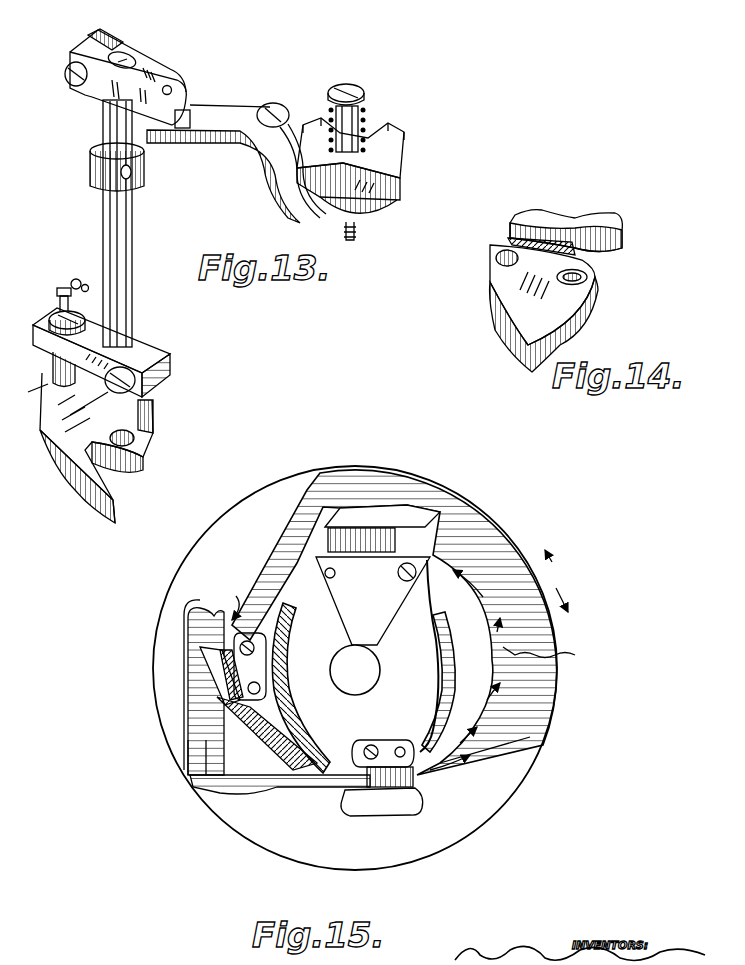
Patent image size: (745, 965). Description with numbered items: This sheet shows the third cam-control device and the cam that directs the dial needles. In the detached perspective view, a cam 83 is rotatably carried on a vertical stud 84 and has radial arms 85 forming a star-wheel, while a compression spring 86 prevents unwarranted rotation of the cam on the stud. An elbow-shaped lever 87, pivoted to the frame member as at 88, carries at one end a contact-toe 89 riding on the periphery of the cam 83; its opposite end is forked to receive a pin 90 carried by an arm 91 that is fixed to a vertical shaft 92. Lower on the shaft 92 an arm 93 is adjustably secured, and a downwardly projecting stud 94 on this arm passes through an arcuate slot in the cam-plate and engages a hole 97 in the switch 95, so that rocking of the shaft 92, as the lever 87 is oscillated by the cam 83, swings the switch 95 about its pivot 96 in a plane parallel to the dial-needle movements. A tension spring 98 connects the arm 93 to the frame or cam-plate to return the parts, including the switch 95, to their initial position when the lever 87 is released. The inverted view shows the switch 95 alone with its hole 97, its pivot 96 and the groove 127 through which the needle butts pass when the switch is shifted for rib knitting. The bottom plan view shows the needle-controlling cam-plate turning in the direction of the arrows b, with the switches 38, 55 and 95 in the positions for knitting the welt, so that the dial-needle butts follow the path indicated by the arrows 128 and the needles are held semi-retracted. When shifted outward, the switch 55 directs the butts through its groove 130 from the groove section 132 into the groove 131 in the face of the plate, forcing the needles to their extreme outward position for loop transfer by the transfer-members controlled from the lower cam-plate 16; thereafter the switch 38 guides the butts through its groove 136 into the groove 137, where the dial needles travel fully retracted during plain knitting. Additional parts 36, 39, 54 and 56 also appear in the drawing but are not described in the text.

In FIG. 15, the lower cam-plate 16 is at (530, 765).
In FIG. 15, the latch 36 is at (405, 740).
In FIG. 15, the switch 38 is at (388, 800).
In FIG. 15, the screw 39 is at (371, 745).
In FIG. 15, the screw 54 is at (256, 694).
In FIG. 15, the switch 55 is at (228, 655).
In FIG. 15, the screw 56 is at (252, 642).
In FIG. 13, the cam 83 is at (356, 190).
In FIG. 13, the vertical stud 84 is at (369, 113).
In FIG. 13, the radial arms 85 is at (400, 132).
In FIG. 13, the compression spring 86 is at (372, 116).
In FIG. 13, the elbow-shaped lever 87 is at (272, 152).
In FIG. 13, the pivot 88 is at (282, 97).
In FIG. 13, the contact-toe 89 is at (378, 194).
In FIG. 13, the pin 90 is at (175, 90).
In FIG. 13, the arm 91 is at (150, 70).
In FIG. 13, the vertical shaft 92 is at (146, 49).
In FIG. 13, the arm 93 is at (154, 347).
In FIG. 13, the stud 94 is at (52, 362).
In FIG. 13, the switch 95 is at (50, 420).
In FIG. 14, the switch 95 is at (544, 308).
In FIG. 15, the switch 95 is at (377, 654).
In FIG. 13, the pivot 96 is at (134, 437).
In FIG. 14, the pivot 96 is at (588, 278).
In FIG. 15, the pivot 96 is at (398, 580).
In FIG. 13, the hole 97 is at (25, 393).
In FIG. 14, the hole 97 is at (495, 263).
In FIG. 15, the hole 97 is at (335, 577).
In FIG. 13, the tension spring 98 is at (72, 280).
In FIG. 14, the groove 127 is at (547, 225).
In FIG. 15, the groove 127 is at (362, 530).
In FIG. 15, the arrows 128 is at (448, 792).
In FIG. 15, the groove 130 is at (218, 672).
In FIG. 15, the groove 131 is at (187, 737).
In FIG. 15, the groove section 132 is at (272, 790).
In FIG. 15, the groove 136 is at (388, 772).
In FIG. 15, the groove 137 is at (293, 690).
In FIG. 15, the arrows b is at (556, 581).